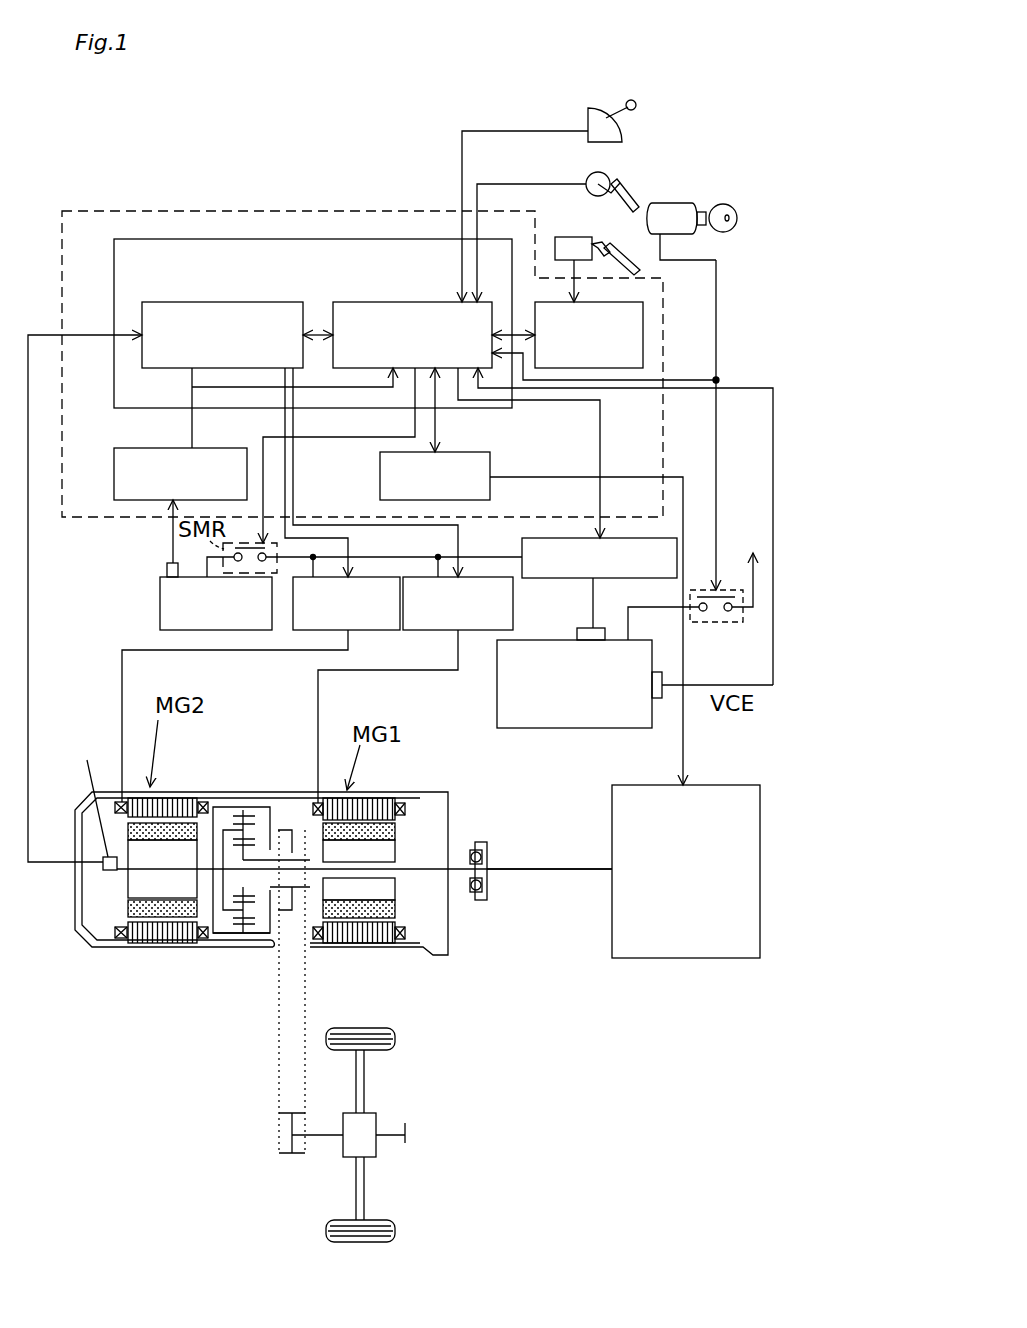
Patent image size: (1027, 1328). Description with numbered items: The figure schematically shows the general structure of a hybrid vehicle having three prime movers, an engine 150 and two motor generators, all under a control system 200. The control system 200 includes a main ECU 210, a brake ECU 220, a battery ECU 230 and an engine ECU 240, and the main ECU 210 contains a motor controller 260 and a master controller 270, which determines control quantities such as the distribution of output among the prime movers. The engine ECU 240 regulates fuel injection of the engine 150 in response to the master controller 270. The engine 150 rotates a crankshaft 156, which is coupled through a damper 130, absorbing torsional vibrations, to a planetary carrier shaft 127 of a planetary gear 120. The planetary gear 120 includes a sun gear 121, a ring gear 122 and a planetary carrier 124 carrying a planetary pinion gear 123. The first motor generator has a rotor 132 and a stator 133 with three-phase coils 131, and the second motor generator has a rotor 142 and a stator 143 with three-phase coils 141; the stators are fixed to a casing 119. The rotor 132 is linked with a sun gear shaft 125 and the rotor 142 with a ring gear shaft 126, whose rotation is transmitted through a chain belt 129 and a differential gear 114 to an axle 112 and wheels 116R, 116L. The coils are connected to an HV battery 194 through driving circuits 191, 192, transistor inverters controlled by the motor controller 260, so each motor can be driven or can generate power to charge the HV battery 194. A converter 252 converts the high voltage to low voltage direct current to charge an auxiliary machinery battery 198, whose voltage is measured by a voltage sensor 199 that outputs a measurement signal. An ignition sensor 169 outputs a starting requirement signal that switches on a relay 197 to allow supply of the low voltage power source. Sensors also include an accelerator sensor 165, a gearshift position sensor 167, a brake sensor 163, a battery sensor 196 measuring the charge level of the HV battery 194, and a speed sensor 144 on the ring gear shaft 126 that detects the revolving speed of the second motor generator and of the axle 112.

The control system 200 is at (180, 211).
The main ECU 210 is at (313, 323).
The motor controller 260 is at (186, 302).
The master controller 270 is at (376, 302).
The brake ECU 220 is at (602, 302).
The battery ECU 230 is at (190, 448).
The engine ECU 240 is at (474, 452).
The converter 252 is at (522, 548).
The driving circuit 191 is at (513, 610).
The driving circuit 192 is at (362, 630).
The HV battery 194 is at (160, 600).
The battery sensor 196 is at (167, 570).
The relay 197 is at (705, 622).
The auxiliary machinery battery 198 is at (497, 704).
The voltage sensor 199 is at (660, 700).
The engine 150 is at (738, 785).
The crankshaft 156 is at (528, 868).
The brake sensor 163 is at (564, 237).
The accelerator sensor 165 is at (592, 172).
The gearshift position sensor 167 is at (593, 108).
The ignition sensor 169 is at (672, 203).
The casing 119 is at (130, 947).
The planetary gear 120 is at (236, 814).
The sun gear 121 is at (262, 840).
The ring gear 122 is at (240, 817).
The planetary pinion gear 123 is at (242, 828).
The planetary carrier 124 is at (223, 833).
The sun gear shaft 125 is at (308, 840).
The ring gear shaft 126 is at (134, 865).
The planetary carrier shaft 127 is at (428, 870).
The chain belt 129 is at (279, 1090).
The damper 130 is at (482, 903).
The three-phase coils 131 is at (405, 808).
The rotor 132 is at (390, 852).
The stator 133 is at (378, 798).
The three-phase coils 141 is at (215, 945).
The rotor 142 is at (125, 885).
The stator 143 is at (137, 798).
The speed sensor 144 is at (85, 796).
The axle 112 is at (364, 1078).
The differential gear 114 is at (376, 1116).
The wheel 116R is at (395, 1038).
The wheel 116L is at (395, 1232).